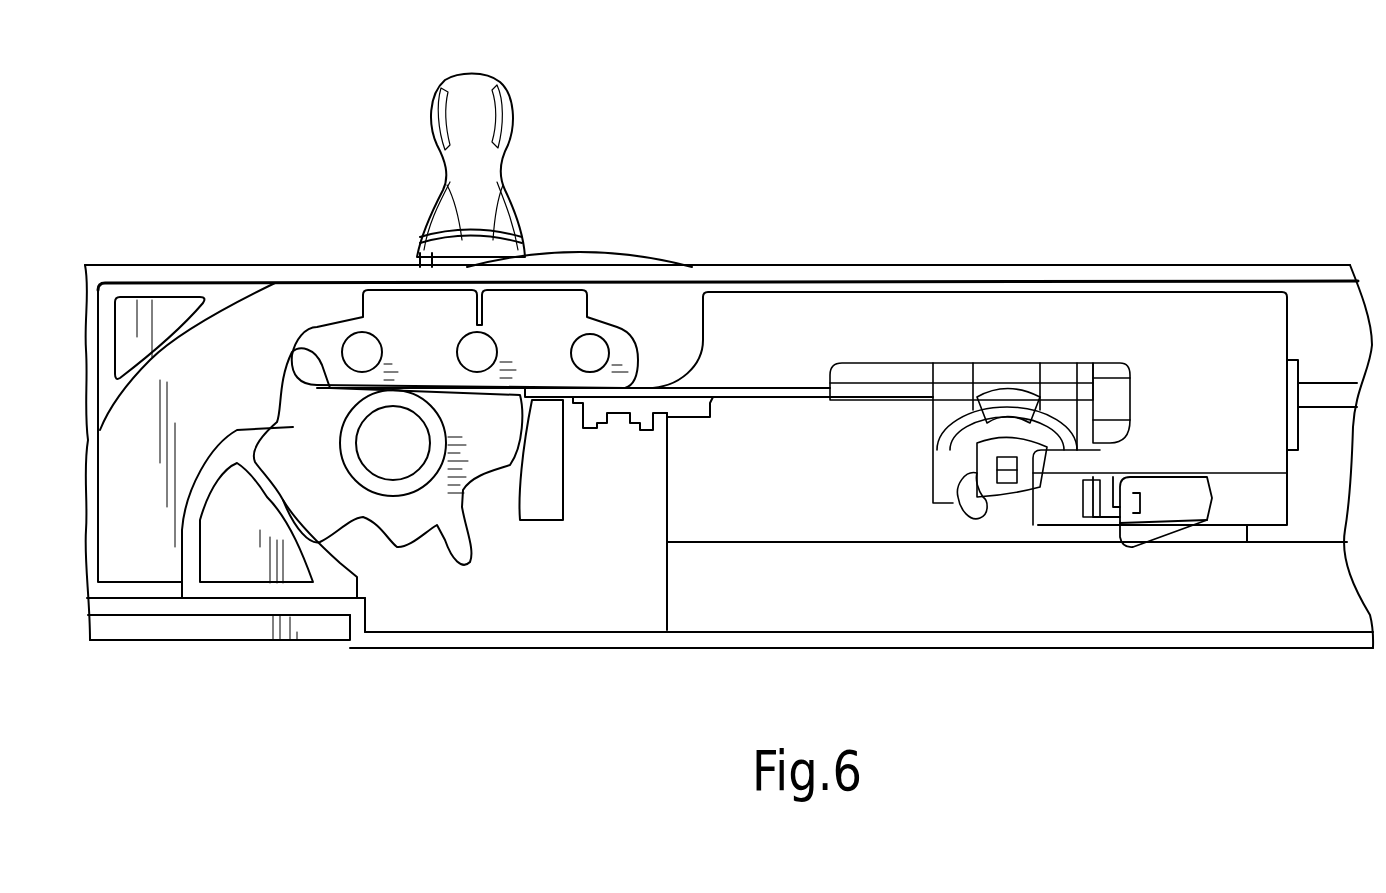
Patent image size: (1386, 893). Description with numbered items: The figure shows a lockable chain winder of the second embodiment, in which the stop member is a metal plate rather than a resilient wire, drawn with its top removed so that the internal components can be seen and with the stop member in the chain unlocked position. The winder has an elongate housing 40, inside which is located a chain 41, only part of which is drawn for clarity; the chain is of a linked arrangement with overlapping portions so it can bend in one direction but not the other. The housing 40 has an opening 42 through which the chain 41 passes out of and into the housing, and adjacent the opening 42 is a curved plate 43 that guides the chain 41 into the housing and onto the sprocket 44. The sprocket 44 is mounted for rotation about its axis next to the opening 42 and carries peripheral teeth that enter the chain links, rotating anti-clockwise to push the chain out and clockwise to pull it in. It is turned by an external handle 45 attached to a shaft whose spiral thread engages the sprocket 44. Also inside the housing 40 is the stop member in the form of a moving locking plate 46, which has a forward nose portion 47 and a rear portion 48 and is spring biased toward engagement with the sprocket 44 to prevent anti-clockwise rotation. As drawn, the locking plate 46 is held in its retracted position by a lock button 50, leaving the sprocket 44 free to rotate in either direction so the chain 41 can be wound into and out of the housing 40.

The housing 40 is at (750, 233).
The chain 41 is at (393, 302).
The opening 42 is at (127, 642).
The curved plate 43 is at (233, 324).
The sprocket 44 is at (425, 535).
The external handle 45 is at (412, 113).
The locking plate 46 is at (848, 290).
The forward nose portion 47 is at (548, 372).
The rear portion 48 is at (1207, 383).
The lock button 50 is at (1163, 503).